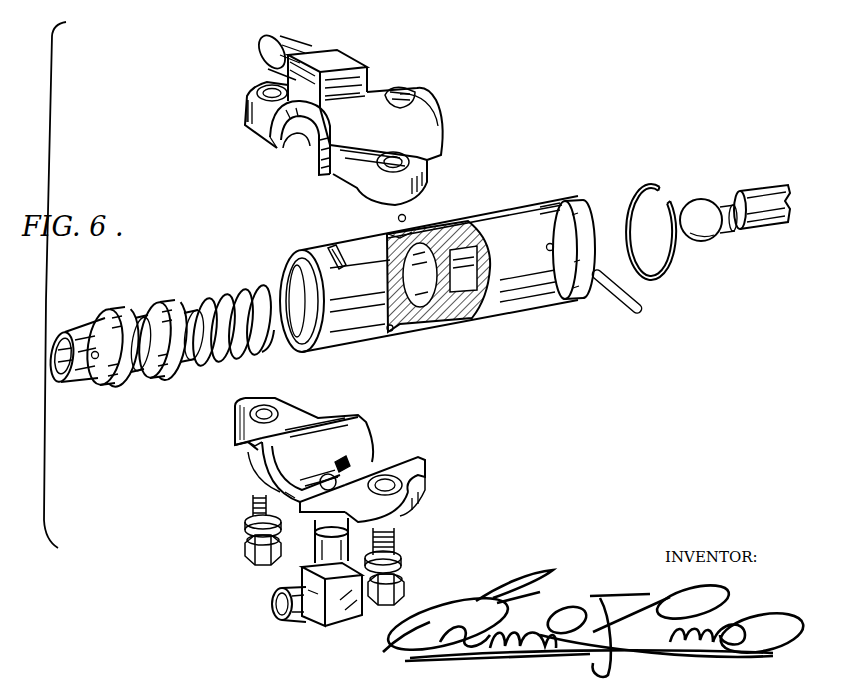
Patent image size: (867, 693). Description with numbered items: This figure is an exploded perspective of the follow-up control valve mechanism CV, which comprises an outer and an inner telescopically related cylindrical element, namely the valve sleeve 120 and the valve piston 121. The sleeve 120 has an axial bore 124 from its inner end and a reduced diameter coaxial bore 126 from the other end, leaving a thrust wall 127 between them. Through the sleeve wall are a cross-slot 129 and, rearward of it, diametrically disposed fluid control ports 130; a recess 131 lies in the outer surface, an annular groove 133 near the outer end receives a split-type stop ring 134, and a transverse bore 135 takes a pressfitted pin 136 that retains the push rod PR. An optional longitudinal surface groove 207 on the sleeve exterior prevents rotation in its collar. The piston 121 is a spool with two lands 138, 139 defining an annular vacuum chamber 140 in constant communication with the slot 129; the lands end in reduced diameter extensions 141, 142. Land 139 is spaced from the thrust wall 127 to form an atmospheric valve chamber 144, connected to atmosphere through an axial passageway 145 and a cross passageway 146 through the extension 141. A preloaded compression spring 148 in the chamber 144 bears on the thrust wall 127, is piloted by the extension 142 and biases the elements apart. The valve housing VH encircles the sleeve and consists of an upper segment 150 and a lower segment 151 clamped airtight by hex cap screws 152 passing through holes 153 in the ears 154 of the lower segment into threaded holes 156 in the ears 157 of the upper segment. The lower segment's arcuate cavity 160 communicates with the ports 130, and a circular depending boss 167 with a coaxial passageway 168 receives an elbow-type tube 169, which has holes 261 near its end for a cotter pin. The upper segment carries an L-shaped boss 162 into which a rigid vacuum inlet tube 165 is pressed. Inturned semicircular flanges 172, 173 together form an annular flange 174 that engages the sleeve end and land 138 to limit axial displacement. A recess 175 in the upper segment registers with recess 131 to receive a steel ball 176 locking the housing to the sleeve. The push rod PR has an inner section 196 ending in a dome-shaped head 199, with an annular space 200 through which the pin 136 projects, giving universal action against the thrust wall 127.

The outer cylindrical element 120 is at (505, 318).
The inner cylindrical element 121 is at (150, 301).
The axial bore 124 is at (292, 283).
The reduced diameter coaxial bore 126 is at (462, 230).
The thrust wall 127 is at (466, 312).
The cross-slot 129 is at (333, 248).
The fluid control ports 130 is at (390, 332).
The recess 131 is at (398, 238).
The annular groove 133 is at (556, 210).
The split-type stop ring 134 is at (645, 187).
The transverse bore 135 is at (548, 243).
The pin 136 is at (621, 305).
The annular land 138 is at (108, 315).
The annular land 139 is at (162, 300).
The annular vacuum chamber 140 is at (144, 376).
The reduced diameter extension 141 is at (70, 378).
The reduced diameter extension 142 is at (190, 362).
The atmospheric valve chamber 144 is at (420, 308).
The axial passageway 145 is at (61, 346).
The cross passageway 146 is at (96, 360).
The compression spring 148 is at (208, 297).
The upper semi-circular segment 150 is at (378, 92).
The lower semi-circular segment 151 is at (426, 470).
The hex cap screws 152 is at (250, 530).
The holes 153 is at (270, 412).
The lateral flanges or ears 154 is at (398, 513).
The internally threaded holes 156 is at (260, 87).
The lateral flanges or ears 157 is at (262, 120).
The arcuate cavity 160 is at (345, 462).
The L-shaped boss 162 is at (362, 64).
The rigid tube 165 is at (266, 46).
The circular depending boss 167 is at (326, 527).
The coaxial passageway 168 is at (338, 478).
The elbow-type tube 169 is at (296, 594).
The inturned semicircular flange 172 is at (286, 147).
The inturned semicircular flange 173 is at (240, 470).
The annular inturned flange 174 is at (306, 150).
The recess 175 is at (438, 100).
The steel ball 176 is at (406, 217).
The inner section 196 is at (736, 198).
The dome-shaped head 199 is at (700, 241).
The annular space 200 is at (730, 236).
The longitudinal surface groove 207 is at (500, 214).
The holes 261 is at (303, 616).
The valve housing VH is at (440, 101).
The follow-up control valve mechanism CV is at (306, 190).
The push rod PR is at (757, 188).